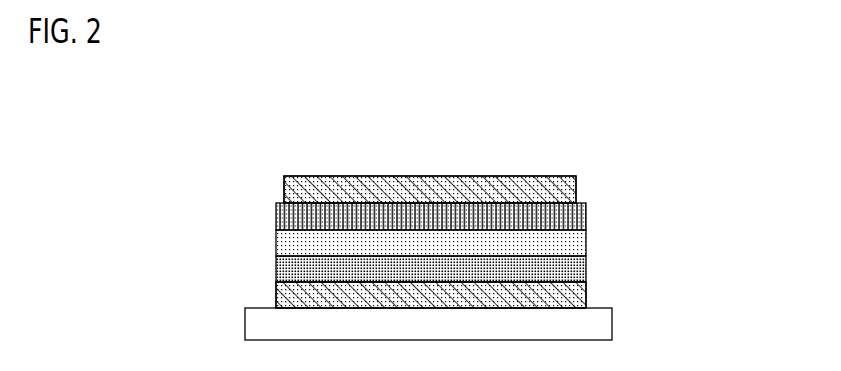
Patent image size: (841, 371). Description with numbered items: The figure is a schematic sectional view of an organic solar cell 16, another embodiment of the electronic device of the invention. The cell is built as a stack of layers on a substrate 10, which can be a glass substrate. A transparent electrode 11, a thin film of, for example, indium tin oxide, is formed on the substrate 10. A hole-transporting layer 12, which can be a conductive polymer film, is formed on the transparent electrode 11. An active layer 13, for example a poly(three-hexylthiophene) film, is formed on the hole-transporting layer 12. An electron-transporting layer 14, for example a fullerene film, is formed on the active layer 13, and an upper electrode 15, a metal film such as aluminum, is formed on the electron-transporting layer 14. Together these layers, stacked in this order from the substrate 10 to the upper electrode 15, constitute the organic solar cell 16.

The substrate 10 is at (600, 319).
The transparent electrode 11 is at (586, 285).
The hole-transporting layer 12 is at (586, 258).
The active layer 13 is at (576, 241).
The electron-transporting layer 14 is at (586, 205).
The upper electrode 15 is at (577, 178).
The organic solar cell 16 is at (492, 156).